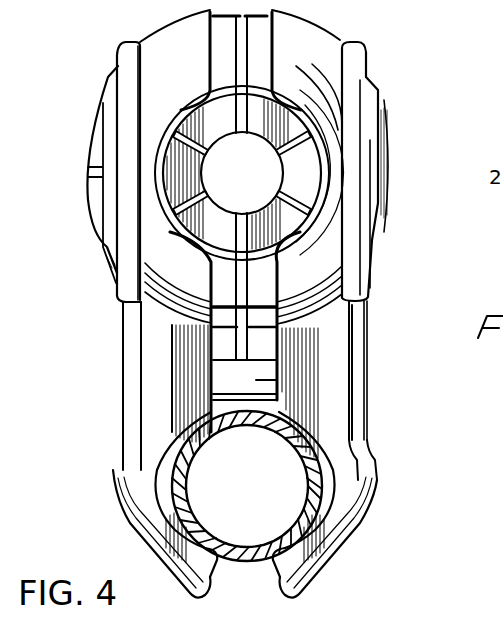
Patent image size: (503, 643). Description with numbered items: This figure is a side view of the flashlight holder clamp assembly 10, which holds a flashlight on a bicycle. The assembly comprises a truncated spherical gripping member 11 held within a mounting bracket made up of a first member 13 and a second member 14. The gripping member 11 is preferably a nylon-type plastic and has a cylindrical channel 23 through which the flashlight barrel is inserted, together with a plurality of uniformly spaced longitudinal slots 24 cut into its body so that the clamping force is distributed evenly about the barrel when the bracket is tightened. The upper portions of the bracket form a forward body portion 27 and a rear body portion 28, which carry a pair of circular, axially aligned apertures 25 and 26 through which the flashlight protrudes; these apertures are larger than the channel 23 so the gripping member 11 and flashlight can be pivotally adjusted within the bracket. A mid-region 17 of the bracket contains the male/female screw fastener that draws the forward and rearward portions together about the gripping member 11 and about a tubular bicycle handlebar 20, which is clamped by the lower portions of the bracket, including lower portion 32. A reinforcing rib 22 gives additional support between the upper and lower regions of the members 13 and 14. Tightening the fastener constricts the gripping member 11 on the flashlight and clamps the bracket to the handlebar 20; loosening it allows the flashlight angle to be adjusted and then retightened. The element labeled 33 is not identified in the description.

The flashlight holder clamp assembly 10 is at (365, 40).
The truncated spherical gripping member 11 is at (264, 42).
The first member 13 is at (101, 278).
The second member 14 is at (402, 265).
The mid-region 17 is at (118, 379).
The bicycle handlebar 20 is at (253, 565).
The reinforcing rib 22 is at (370, 365).
The channel 23 is at (252, 161).
The longitudinal slots 24 is at (208, 20).
The aperture 25 is at (92, 132).
The aperture 26 is at (384, 102).
The forward body portion 27 is at (117, 68).
The rear body portion 28 is at (333, 32).
The lower portion 32 is at (378, 484).
The left arm end 33 is at (113, 468).